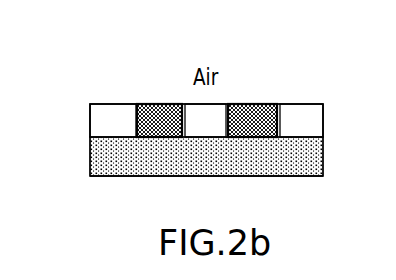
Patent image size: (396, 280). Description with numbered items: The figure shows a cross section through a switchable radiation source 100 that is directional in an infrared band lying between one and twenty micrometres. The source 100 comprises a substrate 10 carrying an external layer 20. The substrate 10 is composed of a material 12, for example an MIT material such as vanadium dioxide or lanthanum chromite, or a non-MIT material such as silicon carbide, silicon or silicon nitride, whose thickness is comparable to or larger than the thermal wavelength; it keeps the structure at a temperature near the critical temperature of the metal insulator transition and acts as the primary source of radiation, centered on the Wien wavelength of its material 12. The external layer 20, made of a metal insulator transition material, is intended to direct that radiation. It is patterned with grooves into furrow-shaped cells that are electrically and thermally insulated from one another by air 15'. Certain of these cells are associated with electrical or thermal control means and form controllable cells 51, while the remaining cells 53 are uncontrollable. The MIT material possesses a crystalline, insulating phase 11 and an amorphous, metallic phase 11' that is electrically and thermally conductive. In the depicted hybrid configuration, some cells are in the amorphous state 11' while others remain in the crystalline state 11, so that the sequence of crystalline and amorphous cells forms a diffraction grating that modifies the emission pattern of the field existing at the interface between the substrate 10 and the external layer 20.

The switchable radiation source 100 is at (298, 65).
The external layer 20 is at (82, 104).
The substrate 10 is at (82, 138).
The crystalline phase 11 is at (158, 88).
The controllable cells 51 is at (145, 104).
The amorphous phase 11' is at (163, 66).
The uncontrollable cells 53 is at (240, 104).
The air 15' is at (292, 81).
The material 12 is at (268, 165).